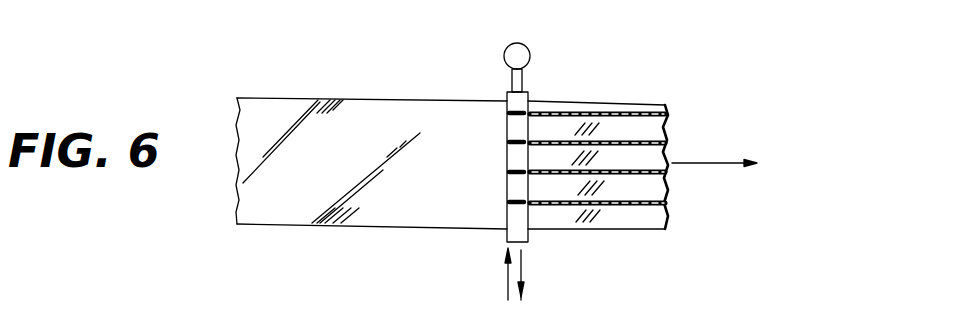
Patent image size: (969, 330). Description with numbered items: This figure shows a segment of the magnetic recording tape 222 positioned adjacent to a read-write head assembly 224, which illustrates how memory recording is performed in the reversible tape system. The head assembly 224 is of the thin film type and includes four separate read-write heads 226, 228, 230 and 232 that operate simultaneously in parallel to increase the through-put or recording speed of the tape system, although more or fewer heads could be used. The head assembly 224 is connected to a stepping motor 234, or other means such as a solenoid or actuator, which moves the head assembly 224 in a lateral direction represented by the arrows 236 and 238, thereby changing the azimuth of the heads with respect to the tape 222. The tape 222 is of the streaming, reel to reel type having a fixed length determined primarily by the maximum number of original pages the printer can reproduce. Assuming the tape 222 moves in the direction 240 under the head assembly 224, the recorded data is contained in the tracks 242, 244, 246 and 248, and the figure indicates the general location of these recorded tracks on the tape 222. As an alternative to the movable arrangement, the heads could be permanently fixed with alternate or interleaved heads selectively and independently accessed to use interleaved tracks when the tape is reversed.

The base plate 222 is at (383, 99).
The slide bar 224 is at (530, 98).
The first strip 226 is at (507, 113).
The second strip 228 is at (507, 142).
The third strip 230 is at (507, 172).
The fourth strip 232 is at (507, 202).
The knob 234 is at (530, 52).
The upward movement arrow 236 is at (506, 275).
The downward movement arrow 238 is at (522, 268).
The direction arrow 240 is at (722, 163).
The strip edge 242 is at (645, 103).
The strip 244 is at (668, 127).
The strip 246 is at (673, 192).
The strip 248 is at (654, 206).